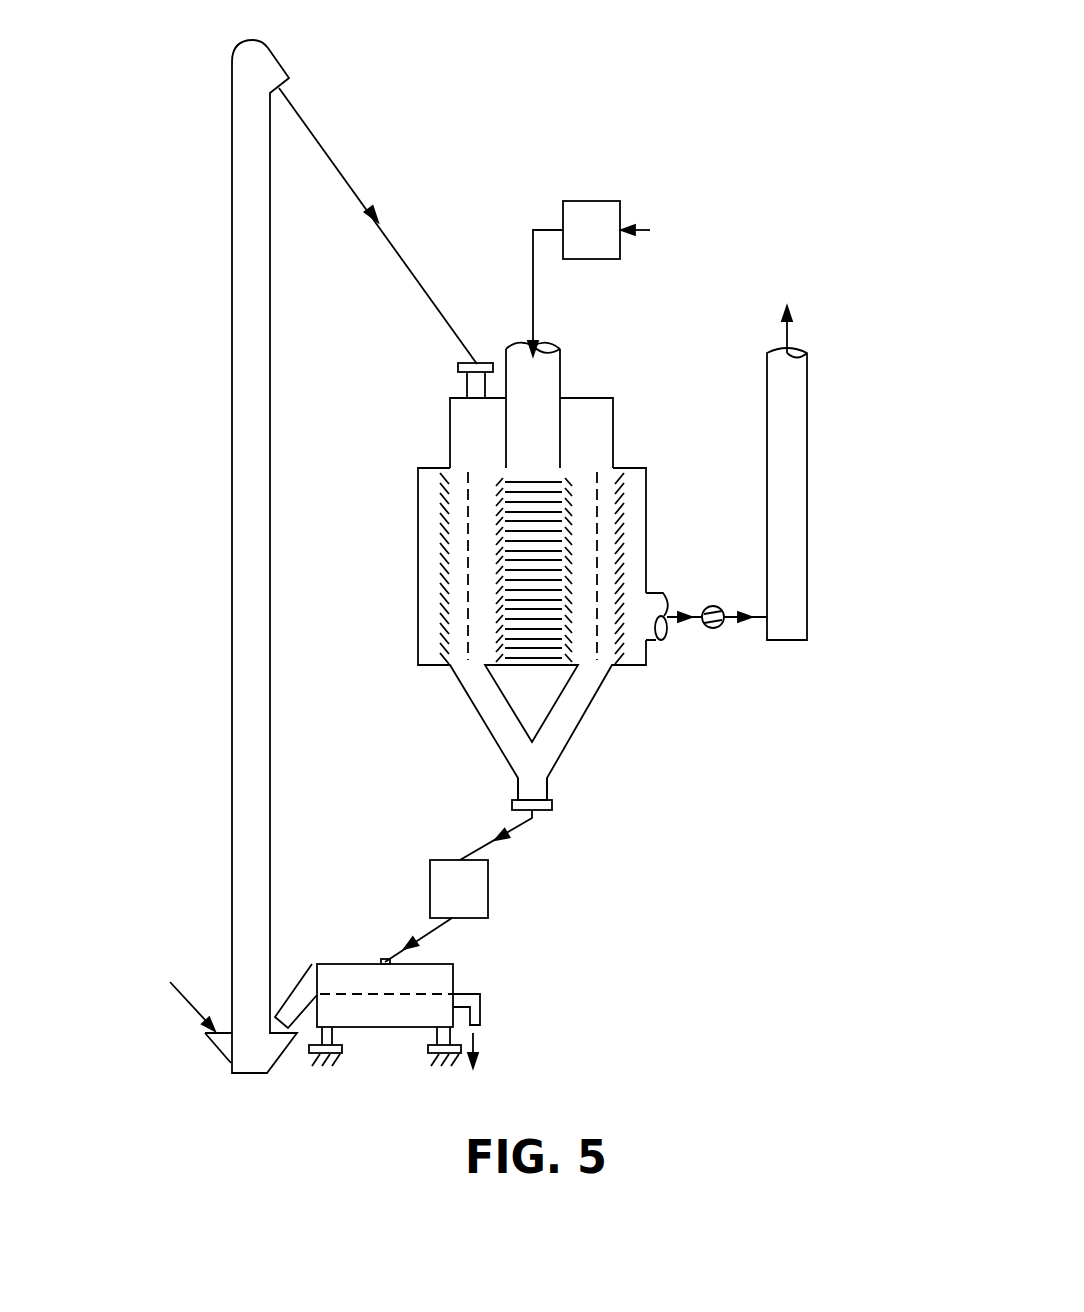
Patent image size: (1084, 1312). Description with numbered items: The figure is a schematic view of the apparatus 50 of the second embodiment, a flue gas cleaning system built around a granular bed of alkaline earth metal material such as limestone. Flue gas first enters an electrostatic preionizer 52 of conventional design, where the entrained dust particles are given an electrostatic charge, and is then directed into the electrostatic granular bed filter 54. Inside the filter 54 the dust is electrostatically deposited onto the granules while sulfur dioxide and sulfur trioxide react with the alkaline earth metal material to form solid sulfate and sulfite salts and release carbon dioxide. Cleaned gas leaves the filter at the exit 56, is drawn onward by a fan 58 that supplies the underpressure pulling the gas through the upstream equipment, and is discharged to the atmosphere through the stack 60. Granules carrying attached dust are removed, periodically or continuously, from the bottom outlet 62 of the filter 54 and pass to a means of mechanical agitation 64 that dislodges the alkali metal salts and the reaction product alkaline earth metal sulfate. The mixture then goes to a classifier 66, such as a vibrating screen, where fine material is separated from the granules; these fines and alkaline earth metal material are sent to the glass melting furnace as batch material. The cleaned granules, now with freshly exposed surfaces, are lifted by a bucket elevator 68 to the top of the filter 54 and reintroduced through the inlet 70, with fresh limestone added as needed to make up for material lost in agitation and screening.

The apparatus 50 is at (490, 118).
The electrostatic preionizer 52 is at (585, 201).
The electrostatic granular bed filter 54 is at (547, 525).
The exit 56 is at (664, 592).
The fan 58 is at (713, 628).
The stack 60 is at (802, 518).
The bottom outlet 62 is at (547, 787).
The means of mechanical agitation 64 is at (488, 910).
The classifier 66 is at (465, 985).
The bucket elevator 68 is at (232, 590).
The inlet 70 is at (478, 361).